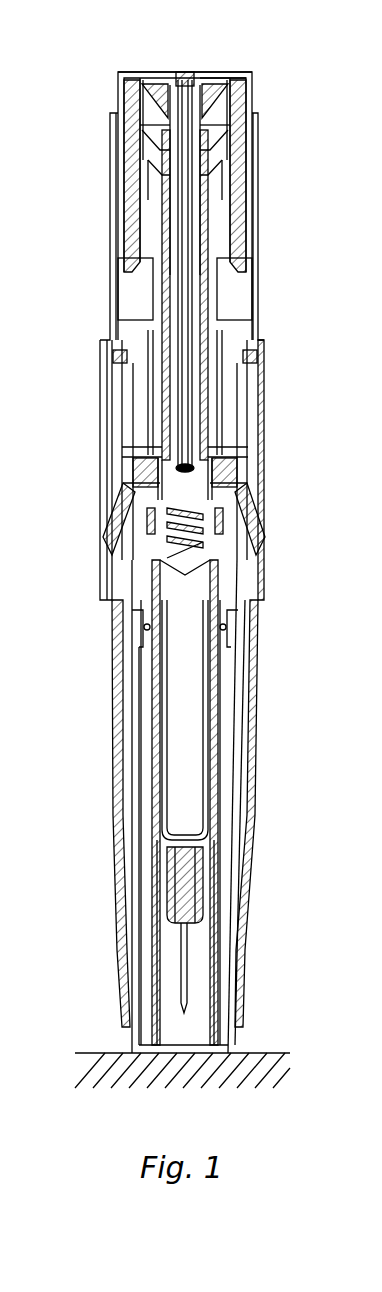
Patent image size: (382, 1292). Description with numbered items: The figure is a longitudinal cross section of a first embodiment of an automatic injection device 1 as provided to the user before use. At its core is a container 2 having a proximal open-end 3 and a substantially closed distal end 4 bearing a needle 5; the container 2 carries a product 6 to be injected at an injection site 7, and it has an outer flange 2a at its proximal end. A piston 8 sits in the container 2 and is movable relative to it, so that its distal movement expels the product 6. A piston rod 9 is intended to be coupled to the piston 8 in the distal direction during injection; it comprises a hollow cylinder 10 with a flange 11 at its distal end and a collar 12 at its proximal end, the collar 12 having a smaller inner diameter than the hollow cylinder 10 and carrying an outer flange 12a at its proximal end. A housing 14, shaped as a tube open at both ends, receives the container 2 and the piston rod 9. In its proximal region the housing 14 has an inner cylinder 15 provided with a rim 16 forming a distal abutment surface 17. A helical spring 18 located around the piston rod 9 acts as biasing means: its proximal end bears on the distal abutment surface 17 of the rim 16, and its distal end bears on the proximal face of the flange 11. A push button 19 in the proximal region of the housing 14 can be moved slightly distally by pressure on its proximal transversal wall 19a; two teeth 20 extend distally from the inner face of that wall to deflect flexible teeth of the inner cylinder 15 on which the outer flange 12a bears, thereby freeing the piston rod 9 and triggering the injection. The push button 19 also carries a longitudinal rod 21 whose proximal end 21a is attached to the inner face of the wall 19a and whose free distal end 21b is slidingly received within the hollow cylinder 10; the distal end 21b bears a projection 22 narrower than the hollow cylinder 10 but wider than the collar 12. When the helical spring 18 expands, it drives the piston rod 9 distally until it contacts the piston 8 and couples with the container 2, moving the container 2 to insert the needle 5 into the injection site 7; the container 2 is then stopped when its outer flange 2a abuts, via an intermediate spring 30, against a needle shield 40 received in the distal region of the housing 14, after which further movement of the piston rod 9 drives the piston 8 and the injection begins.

The device 1 is at (291, 83).
The push button 19 is at (116, 68).
The proximal transversal wall 19a is at (214, 72).
The proximal end 21a is at (186, 72).
The teeth 20 is at (124, 108).
The outer flange 12a is at (245, 140).
The collar 12 is at (255, 172).
The rim 16 is at (140, 150).
The distal abutment surface 17 is at (150, 170).
The longitudinal rod 21 is at (150, 236).
The helical spring 18 is at (215, 288).
The inner cylinder 15 is at (215, 300).
The housing 14 is at (266, 343).
The hollow cylinder 10 is at (150, 396).
The piston rod 9 is at (210, 405).
The proximal open-end 3 is at (165, 452).
The outer flange 2a is at (225, 447).
The projection 22 is at (165, 462).
The flange 11 is at (225, 480).
The free distal end 21b is at (130, 510).
The piston 8 is at (220, 566).
The intermediate spring 30 is at (248, 636).
The product 6 is at (192, 740).
The container 2 is at (248, 740).
The needle shield 40 is at (248, 850).
The distal end 4 is at (171, 934).
The needle 5 is at (186, 997).
The injection site 7 is at (191, 1118).